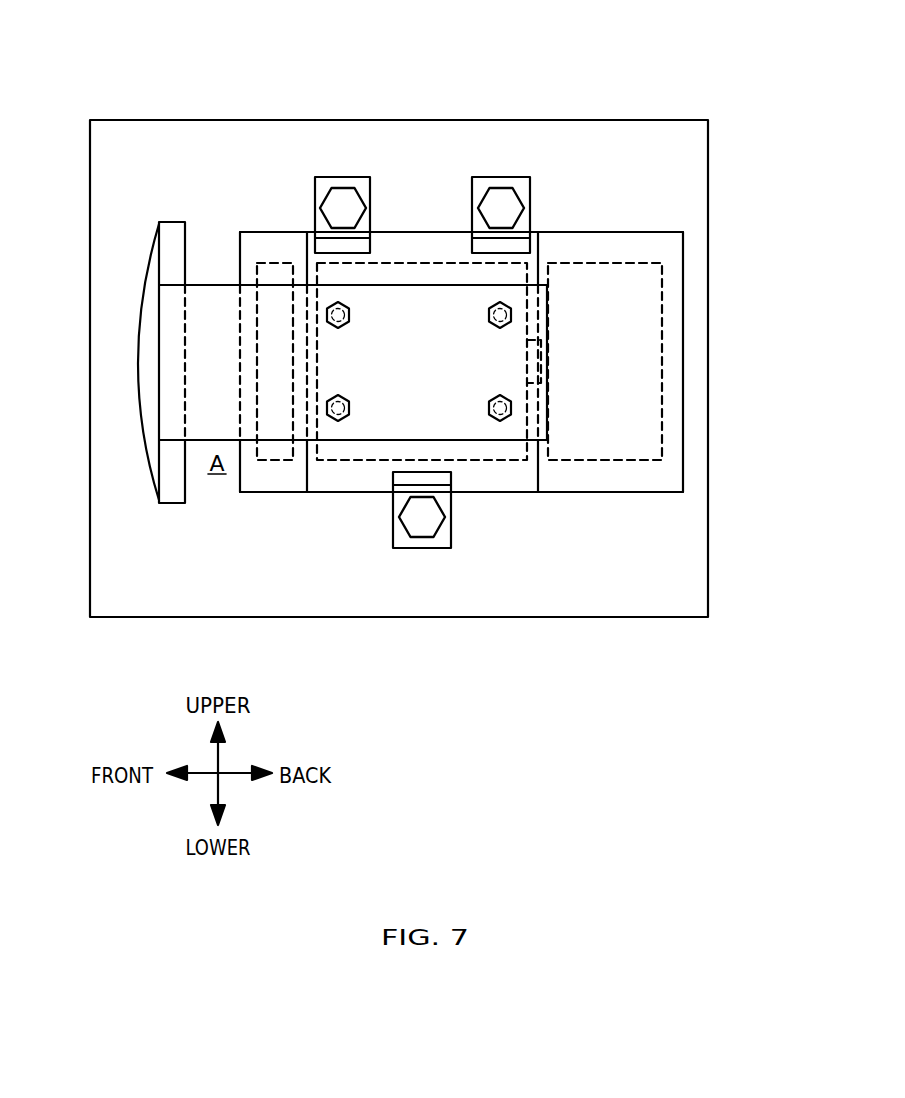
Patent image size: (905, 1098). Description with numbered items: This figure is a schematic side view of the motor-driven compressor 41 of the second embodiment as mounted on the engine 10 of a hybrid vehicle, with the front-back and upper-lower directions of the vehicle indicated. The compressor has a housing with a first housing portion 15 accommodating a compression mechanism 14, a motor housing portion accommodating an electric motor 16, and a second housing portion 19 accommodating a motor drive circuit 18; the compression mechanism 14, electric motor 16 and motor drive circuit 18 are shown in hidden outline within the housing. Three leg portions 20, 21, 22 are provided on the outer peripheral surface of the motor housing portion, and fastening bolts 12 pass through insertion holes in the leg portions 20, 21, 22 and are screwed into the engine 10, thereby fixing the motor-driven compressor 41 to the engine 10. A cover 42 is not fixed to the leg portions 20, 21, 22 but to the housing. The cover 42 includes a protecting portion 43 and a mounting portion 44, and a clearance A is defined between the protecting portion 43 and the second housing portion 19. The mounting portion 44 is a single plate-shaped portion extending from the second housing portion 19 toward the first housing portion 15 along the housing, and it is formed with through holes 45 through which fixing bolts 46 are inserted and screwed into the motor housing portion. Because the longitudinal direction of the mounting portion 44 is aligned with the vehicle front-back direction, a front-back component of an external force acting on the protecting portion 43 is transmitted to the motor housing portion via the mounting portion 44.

The engine 10 is at (594, 116).
The fastening bolt 12 is at (343, 186).
The compression mechanism 14 is at (625, 460).
The first housing portion 15 is at (683, 325).
The electric motor 16 is at (490, 460).
The motor drive circuit 18 is at (275, 460).
The second housing portion 19 is at (242, 252).
The leg portion 20 is at (530, 192).
The leg portion 21 is at (312, 194).
The leg portion 22 is at (451, 528).
The motor-driven compressor 41 is at (643, 209).
The cover 42 is at (171, 216).
The protecting portion 43 is at (138, 398).
The mounting portion 44 is at (372, 427).
The through hole 45 is at (350, 322).
The fixing bolt 46 is at (326, 315).